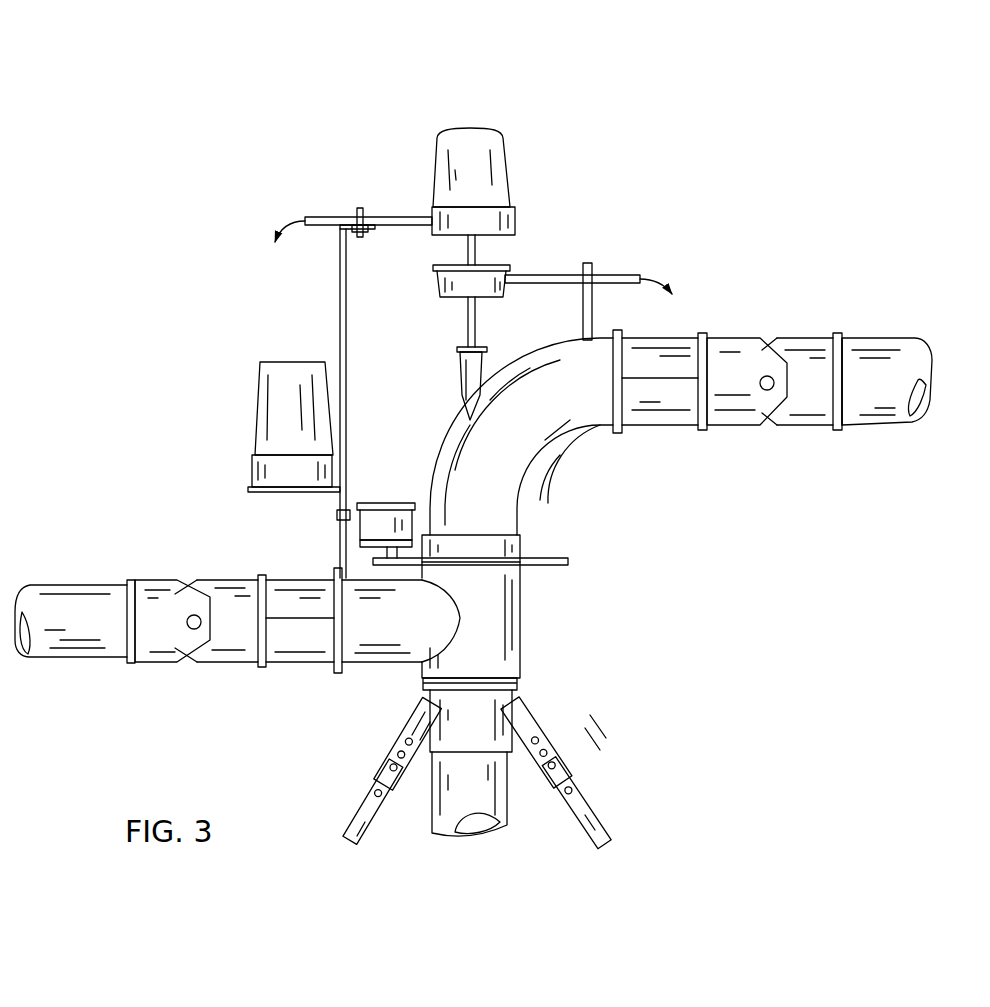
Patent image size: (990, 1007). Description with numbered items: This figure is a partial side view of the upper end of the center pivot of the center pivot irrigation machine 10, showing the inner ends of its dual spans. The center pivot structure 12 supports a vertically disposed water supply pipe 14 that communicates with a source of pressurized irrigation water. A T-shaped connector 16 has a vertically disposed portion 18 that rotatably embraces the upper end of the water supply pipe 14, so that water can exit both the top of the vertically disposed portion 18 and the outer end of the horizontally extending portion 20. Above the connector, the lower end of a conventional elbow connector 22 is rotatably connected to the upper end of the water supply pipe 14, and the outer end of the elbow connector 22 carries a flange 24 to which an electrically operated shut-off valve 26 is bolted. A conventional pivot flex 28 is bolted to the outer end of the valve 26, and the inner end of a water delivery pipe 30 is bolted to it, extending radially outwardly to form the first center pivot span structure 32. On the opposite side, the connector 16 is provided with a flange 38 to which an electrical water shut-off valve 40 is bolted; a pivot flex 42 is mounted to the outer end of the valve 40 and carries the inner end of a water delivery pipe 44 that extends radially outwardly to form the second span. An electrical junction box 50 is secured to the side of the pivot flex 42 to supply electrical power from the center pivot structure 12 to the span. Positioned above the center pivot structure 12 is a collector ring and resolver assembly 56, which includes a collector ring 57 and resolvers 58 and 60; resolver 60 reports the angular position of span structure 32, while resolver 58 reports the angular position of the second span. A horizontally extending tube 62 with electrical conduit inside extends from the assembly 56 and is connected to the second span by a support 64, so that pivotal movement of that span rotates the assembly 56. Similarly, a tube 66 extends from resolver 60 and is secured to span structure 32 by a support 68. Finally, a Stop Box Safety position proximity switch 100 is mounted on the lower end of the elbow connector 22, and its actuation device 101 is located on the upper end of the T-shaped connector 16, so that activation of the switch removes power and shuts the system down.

The center pivot irrigation machine 10 is at (676, 230).
The center pivot structure 12 is at (372, 760).
The water supply pipe 14 is at (490, 785).
The T-shaped connector 16 is at (516, 623).
The vertically disposed portion 18 is at (470, 598).
The horizontally extending portion 20 is at (370, 628).
The elbow connector 22 is at (508, 460).
The flange 24 is at (597, 433).
The electrically operated shut-off valve 26 is at (670, 332).
The pivot flex 28 is at (808, 337).
The water delivery pipe 30 is at (887, 367).
The first center pivot span structure 32 is at (908, 314).
The flange 38 is at (342, 672).
The electrical water shut-off valve 40 is at (303, 578).
The pivot flex 42 is at (192, 580).
The water delivery pipe 44 is at (87, 598).
The electrical junction box 50 is at (268, 408).
The collector ring and resolver assembly 56 is at (526, 190).
The collector ring 57 is at (495, 150).
The resolver 58 is at (533, 274).
The resolver 60 is at (514, 262).
The horizontally extending tube 62 is at (407, 215).
The support 64 is at (344, 278).
The tube 66 is at (618, 272).
The support 68 is at (584, 306).
The position proximity switch 100 is at (378, 518).
The actuation device 101 is at (568, 562).